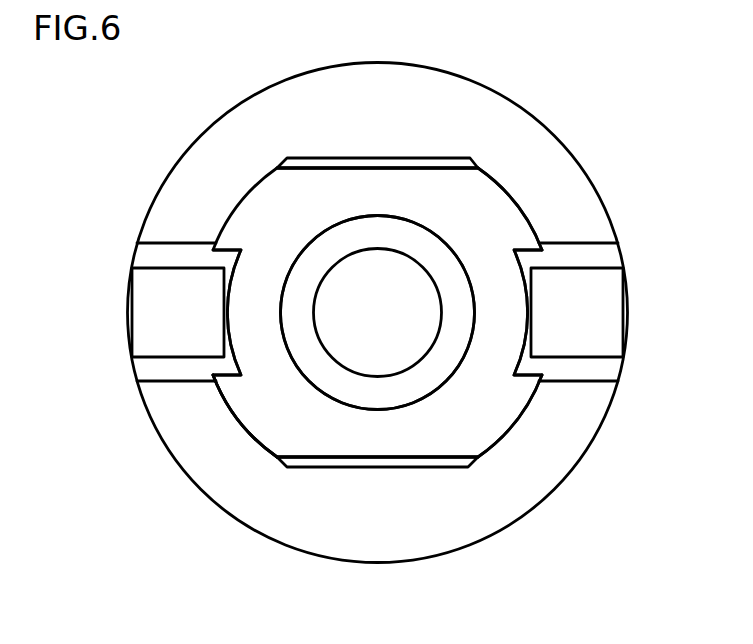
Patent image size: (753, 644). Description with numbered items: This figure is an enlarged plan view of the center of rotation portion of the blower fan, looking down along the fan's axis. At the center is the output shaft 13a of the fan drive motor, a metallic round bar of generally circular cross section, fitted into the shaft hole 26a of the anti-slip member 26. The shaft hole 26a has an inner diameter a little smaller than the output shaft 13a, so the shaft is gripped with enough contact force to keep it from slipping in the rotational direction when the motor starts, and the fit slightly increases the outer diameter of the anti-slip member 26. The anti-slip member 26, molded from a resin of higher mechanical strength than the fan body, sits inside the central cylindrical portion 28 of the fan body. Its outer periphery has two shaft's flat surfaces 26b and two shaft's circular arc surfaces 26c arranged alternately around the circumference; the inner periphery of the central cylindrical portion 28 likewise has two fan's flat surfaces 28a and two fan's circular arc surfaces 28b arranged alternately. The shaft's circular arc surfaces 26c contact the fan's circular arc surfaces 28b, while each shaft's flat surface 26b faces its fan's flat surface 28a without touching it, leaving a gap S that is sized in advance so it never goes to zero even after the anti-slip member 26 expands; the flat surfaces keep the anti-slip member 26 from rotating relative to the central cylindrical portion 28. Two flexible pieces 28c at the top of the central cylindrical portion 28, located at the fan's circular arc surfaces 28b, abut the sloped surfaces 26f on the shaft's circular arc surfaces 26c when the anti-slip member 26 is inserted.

The output shaft 13a is at (395, 275).
The anti-slip member 26 is at (456, 380).
The shaft hole 26a is at (509, 418).
The shaft's flat surface 26b is at (320, 458).
The shaft's circular arc surface 26c is at (247, 440).
The sloped surface 26f is at (537, 261).
The central cylindrical portion 28 is at (517, 142).
The fan's flat surface 28a is at (414, 467).
The fan's circular arc surface 28b is at (234, 418).
The flexible piece 28c is at (660, 318).
The gap S is at (365, 460).